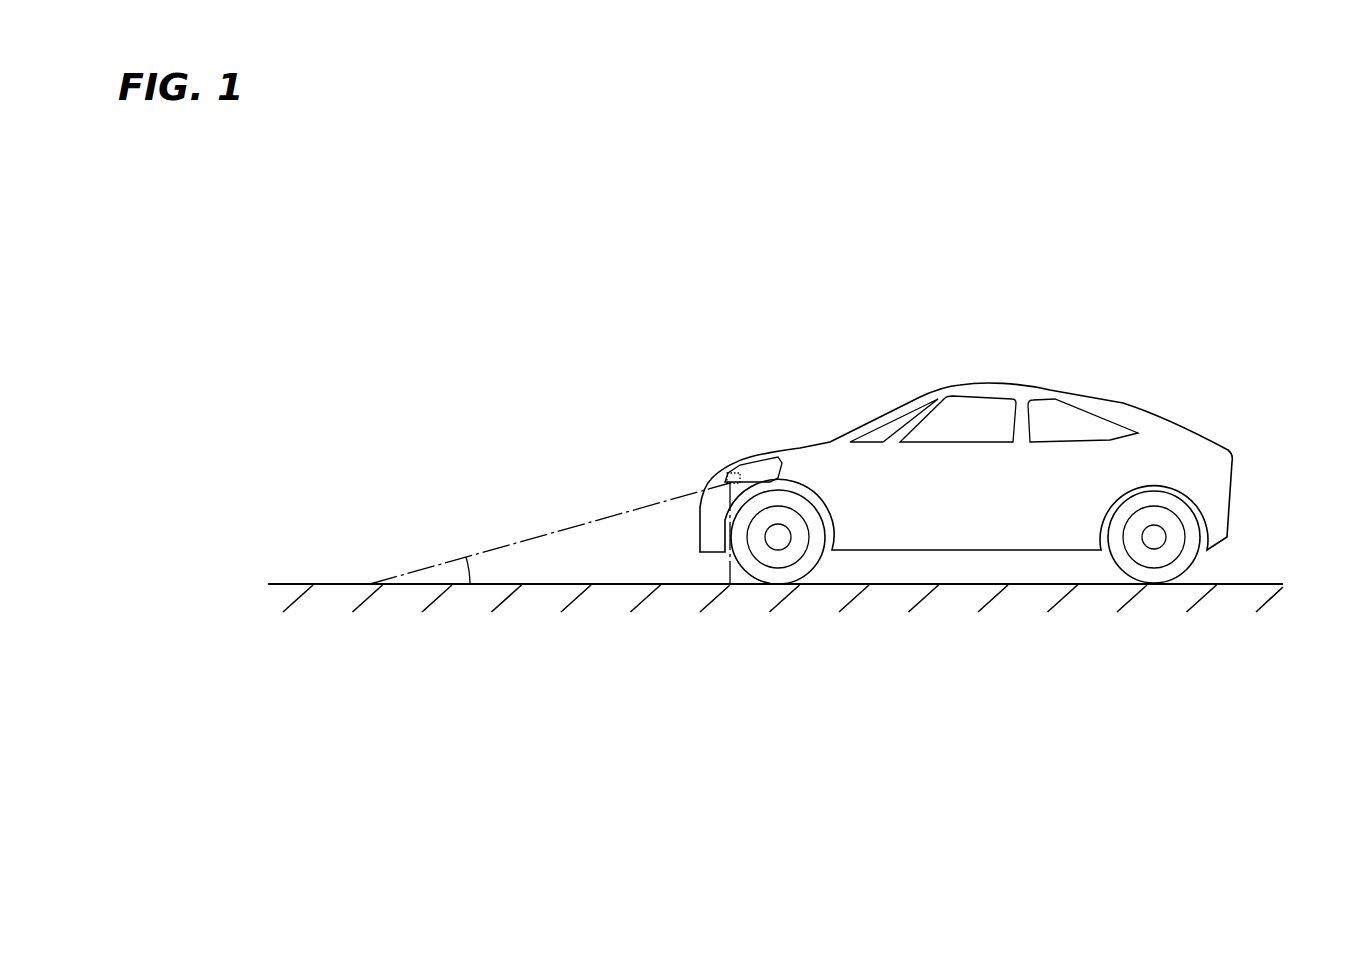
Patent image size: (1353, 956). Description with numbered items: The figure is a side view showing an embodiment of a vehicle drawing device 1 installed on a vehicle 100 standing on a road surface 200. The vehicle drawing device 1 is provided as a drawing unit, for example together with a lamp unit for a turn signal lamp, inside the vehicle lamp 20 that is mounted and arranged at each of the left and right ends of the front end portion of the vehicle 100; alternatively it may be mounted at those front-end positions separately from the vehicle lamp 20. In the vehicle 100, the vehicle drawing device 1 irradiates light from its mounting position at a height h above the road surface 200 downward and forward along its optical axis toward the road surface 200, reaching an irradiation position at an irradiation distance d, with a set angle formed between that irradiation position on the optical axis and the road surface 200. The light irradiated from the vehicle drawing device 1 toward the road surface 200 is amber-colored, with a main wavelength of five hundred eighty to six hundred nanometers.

The vehicle drawing device 1 is at (737, 463).
The vehicle lamp 20 is at (765, 463).
The vehicle 100 is at (1124, 404).
The road surface 200 is at (341, 584).
The irradiation distance d is at (535, 537).
The height h is at (727, 571).